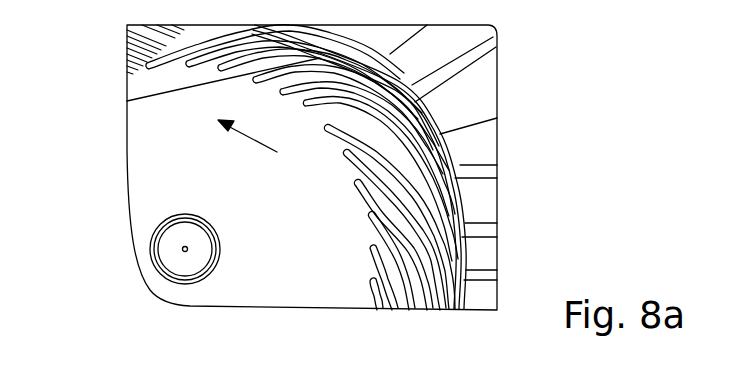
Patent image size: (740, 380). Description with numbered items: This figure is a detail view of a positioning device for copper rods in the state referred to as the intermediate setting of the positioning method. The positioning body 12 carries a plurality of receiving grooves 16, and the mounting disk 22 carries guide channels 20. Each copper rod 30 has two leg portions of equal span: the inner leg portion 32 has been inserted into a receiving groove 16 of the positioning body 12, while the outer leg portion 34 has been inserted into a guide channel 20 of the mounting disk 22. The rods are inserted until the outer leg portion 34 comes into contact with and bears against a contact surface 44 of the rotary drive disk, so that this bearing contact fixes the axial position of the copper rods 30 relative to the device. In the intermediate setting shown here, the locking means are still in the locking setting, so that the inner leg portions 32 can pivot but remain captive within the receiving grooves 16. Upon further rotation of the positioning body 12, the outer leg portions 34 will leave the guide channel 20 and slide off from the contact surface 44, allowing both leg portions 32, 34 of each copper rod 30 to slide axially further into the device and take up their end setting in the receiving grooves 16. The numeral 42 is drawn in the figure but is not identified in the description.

The positioning body 12 is at (155, 160).
The receiving groove 16 is at (332, 128).
The guide channel 20 is at (480, 222).
The mounting disk 22 is at (485, 254).
The copper rod 30 is at (353, 168).
The inner leg portion 32 is at (127, 101).
The outer leg portion 34 is at (443, 122).
The lower tooth 42 is at (389, 311).
The contact surface 44 is at (478, 173).